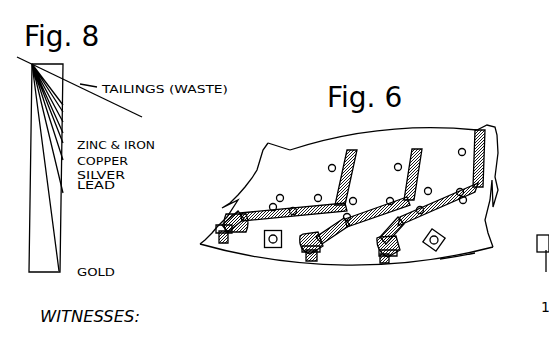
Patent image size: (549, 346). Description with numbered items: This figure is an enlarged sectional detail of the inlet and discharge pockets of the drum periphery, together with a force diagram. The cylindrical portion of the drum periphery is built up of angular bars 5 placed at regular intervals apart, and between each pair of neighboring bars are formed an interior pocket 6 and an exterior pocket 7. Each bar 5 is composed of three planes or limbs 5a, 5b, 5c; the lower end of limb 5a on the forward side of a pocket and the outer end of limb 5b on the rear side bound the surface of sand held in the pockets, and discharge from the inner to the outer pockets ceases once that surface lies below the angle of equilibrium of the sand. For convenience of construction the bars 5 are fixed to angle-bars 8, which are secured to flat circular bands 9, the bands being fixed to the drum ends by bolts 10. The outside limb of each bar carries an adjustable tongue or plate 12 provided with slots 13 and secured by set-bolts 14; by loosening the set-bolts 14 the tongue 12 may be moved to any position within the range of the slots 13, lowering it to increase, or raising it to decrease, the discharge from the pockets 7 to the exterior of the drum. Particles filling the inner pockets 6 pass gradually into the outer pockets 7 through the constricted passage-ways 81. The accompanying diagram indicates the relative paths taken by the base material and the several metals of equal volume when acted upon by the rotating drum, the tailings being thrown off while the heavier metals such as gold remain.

The angular bar 5 is at (372, 195).
The limb of bar 5a is at (347, 151).
The limb of bar 5b is at (298, 207).
The limb of bar 5c is at (325, 233).
The interior pocket 6 is at (383, 168).
The exterior pocket 7 is at (300, 222).
The angle-bar 8 is at (368, 185).
The flat circular band 9 is at (455, 250).
The bolt 10 is at (268, 247).
The adjustable tongue or plate 12 is at (222, 247).
The slot 13 is at (215, 232).
The set-bolt 14 is at (223, 217).
The constricted passage-way 81 is at (327, 197).